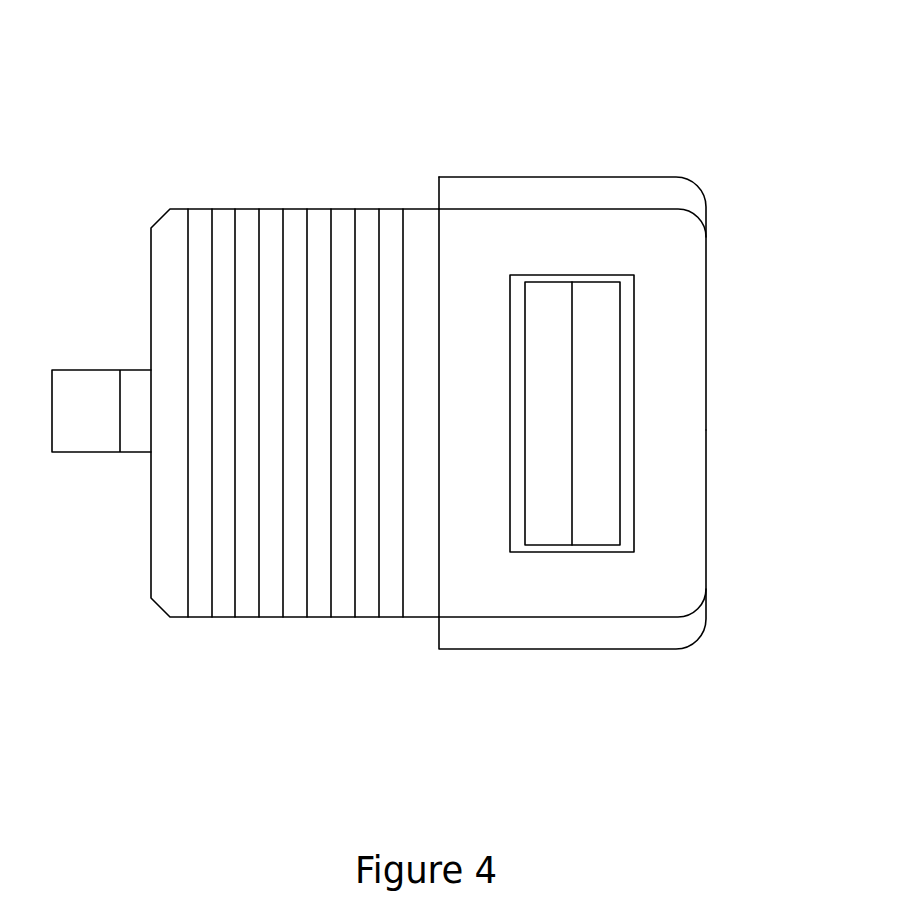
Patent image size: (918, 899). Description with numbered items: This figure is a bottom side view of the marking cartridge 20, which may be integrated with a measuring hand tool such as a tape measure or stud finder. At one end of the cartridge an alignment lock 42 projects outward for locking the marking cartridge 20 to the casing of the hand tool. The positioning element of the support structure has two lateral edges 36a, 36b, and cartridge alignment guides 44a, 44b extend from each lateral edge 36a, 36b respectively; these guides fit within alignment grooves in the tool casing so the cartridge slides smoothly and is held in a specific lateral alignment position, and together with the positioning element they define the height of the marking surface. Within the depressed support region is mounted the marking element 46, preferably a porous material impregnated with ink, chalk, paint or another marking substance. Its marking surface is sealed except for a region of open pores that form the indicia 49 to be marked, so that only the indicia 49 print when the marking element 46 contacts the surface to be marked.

The marking cartridge 20 is at (425, 105).
The alignment lock 42 is at (88, 415).
The lateral edge 36a is at (638, 650).
The lateral edge 36b is at (622, 178).
The cartridge alignment guide 44a is at (518, 635).
The cartridge alignment guide 44b is at (504, 192).
The marking element 46 is at (597, 459).
The indicia 49 is at (573, 400).